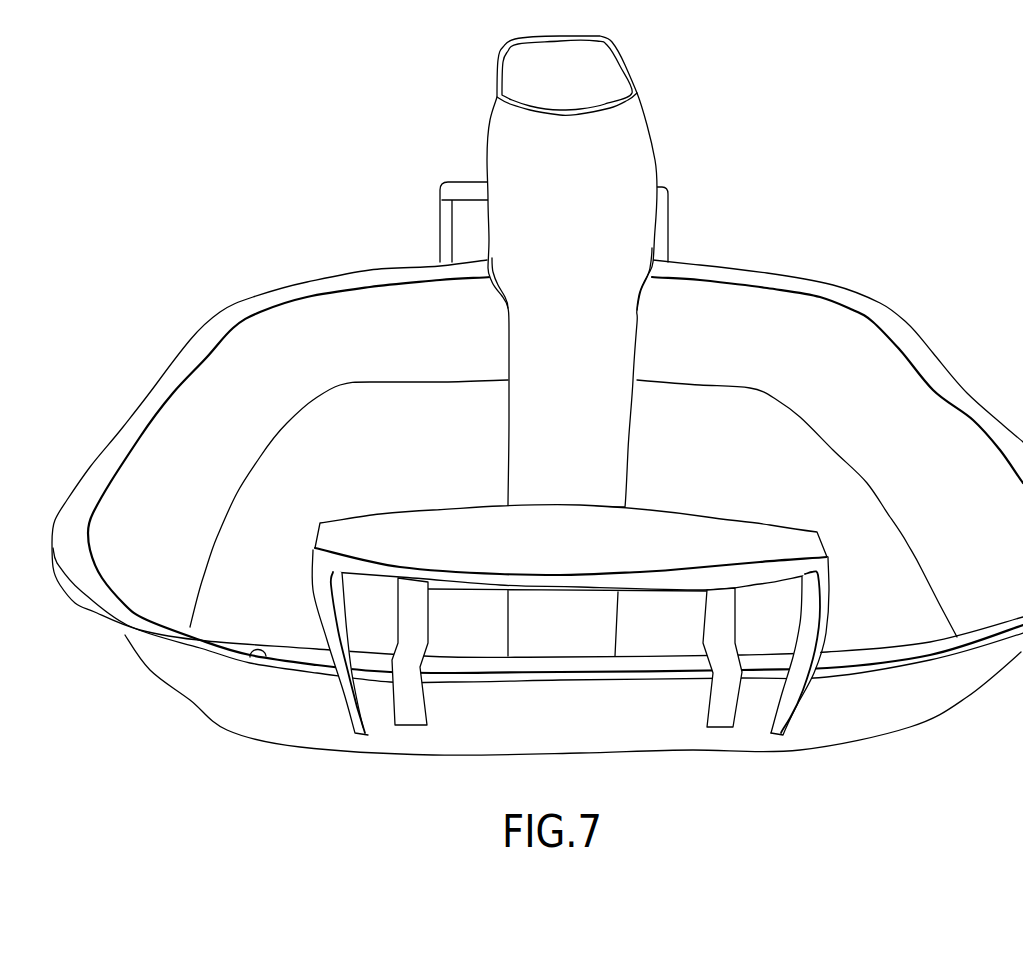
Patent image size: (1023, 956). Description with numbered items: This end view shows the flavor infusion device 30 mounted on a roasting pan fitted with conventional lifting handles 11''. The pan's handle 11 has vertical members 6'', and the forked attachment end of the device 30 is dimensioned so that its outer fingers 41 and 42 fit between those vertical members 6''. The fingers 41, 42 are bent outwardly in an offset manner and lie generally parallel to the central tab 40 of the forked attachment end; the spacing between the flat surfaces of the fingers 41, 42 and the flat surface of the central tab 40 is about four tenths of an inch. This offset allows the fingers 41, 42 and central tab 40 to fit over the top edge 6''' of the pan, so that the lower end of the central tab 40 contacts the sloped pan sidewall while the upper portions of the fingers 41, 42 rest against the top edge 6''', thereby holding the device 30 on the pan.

The flavor infusion device 30 is at (665, 151).
The handle 11 is at (554, 183).
The vertical members 6'' is at (637, 446).
The top edge 6''' is at (239, 712).
The lifting handles 11'' is at (571, 515).
The central tab 40 is at (618, 628).
The outer finger 41 is at (705, 703).
The outer finger 42 is at (428, 698).